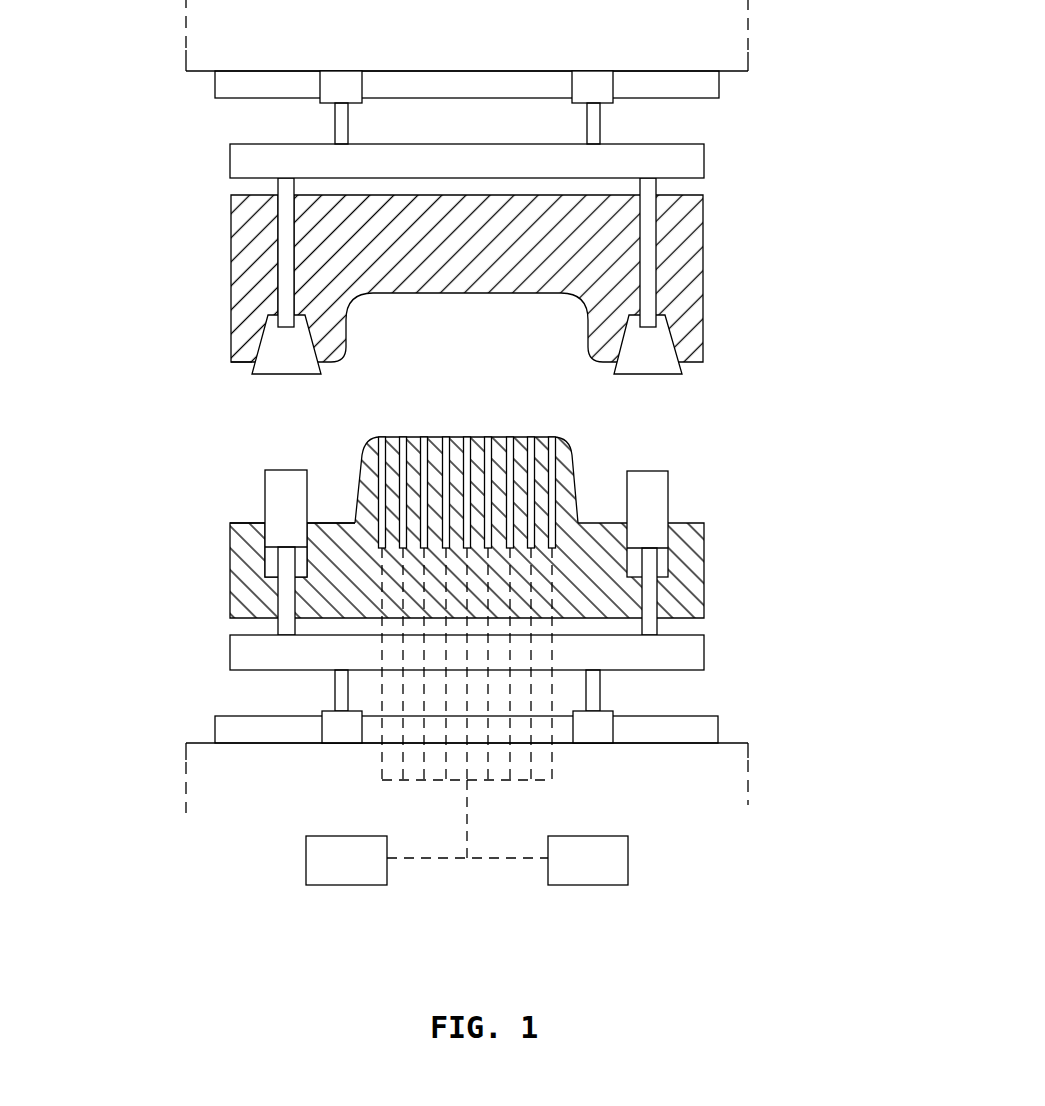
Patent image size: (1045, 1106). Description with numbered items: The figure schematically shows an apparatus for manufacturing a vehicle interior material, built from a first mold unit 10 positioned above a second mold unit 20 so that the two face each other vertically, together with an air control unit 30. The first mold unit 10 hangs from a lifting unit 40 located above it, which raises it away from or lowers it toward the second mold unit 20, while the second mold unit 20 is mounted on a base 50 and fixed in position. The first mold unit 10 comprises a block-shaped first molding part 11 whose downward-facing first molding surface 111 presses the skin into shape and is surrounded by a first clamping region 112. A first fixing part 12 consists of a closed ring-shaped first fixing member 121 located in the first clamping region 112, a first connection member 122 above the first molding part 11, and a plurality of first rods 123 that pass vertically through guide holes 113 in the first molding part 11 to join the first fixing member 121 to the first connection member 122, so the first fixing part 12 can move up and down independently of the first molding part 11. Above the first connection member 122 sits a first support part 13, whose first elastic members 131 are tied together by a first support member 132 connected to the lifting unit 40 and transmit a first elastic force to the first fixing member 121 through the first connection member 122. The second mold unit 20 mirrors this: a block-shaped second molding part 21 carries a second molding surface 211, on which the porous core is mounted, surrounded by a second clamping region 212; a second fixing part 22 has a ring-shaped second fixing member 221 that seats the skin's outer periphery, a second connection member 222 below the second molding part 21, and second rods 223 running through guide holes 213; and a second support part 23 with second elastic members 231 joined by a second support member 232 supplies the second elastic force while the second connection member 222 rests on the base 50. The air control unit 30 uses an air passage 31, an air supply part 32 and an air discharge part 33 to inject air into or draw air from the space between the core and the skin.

The first mold unit 10 is at (483, 224).
The first molding part 11 is at (477, 306).
The first molding surface 111 is at (462, 295).
The first clamping region 112 is at (238, 377).
The guide hole 113 is at (277, 295).
The first fixing part 12 is at (449, 291).
The first fixing member 121 is at (272, 348).
The first connection member 122 is at (237, 162).
The first rod 123 is at (285, 247).
The first support part 13 is at (505, 73).
The first elastic member 131 is at (342, 125).
The first support member 132 is at (473, 80).
The second mold unit 20 is at (481, 598).
The second molding part 21 is at (471, 493).
The second molding surface 211 is at (543, 437).
The second clamping region 212 is at (247, 511).
The guide hole 213 is at (268, 565).
The second fixing part 22 is at (455, 574).
The second fixing member 221 is at (275, 482).
The second connection member 222 is at (237, 652).
The second rod 223 is at (287, 594).
The second support part 23 is at (501, 749).
The second elastic member 231 is at (340, 690).
The second support member 232 is at (248, 738).
The air control unit 30 is at (464, 687).
The air passage 31 is at (381, 443).
The air supply part 32 is at (350, 883).
The air discharge part 33 is at (593, 883).
The lifting unit 40 is at (748, 18).
The base 50 is at (752, 797).